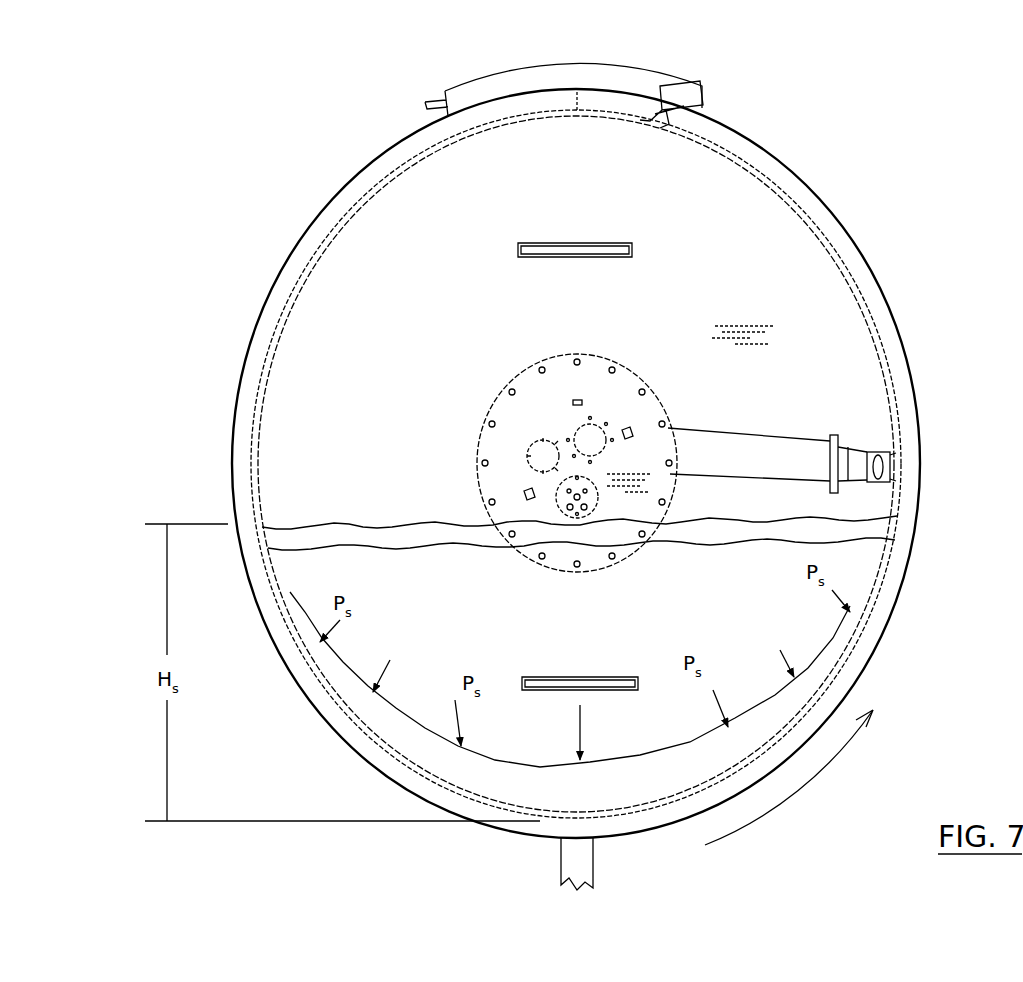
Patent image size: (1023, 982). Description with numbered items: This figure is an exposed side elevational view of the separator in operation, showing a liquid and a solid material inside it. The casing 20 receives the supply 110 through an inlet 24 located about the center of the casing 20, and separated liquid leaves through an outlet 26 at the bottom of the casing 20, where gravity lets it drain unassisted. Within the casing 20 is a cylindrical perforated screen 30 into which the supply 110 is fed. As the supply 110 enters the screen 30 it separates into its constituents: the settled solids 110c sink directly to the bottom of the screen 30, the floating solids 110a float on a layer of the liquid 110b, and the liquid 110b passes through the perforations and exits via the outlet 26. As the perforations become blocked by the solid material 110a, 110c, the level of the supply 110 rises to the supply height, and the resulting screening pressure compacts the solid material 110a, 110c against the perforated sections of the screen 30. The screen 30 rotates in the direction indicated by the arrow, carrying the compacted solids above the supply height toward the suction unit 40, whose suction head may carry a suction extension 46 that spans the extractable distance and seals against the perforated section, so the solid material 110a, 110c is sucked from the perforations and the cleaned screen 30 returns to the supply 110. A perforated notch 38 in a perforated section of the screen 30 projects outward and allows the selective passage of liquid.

The casing 20 is at (814, 181).
The inlet 24 is at (529, 451).
The outlet 26 is at (597, 866).
The screen 30 is at (868, 300).
The perforated notch 38 is at (663, 107).
The suction unit 40 is at (705, 430).
The suction extension 46 is at (884, 451).
The supply 110 is at (818, 632).
The floating solids 110a is at (877, 531).
The liquid 110b is at (583, 632).
The settled solids 110c is at (643, 785).